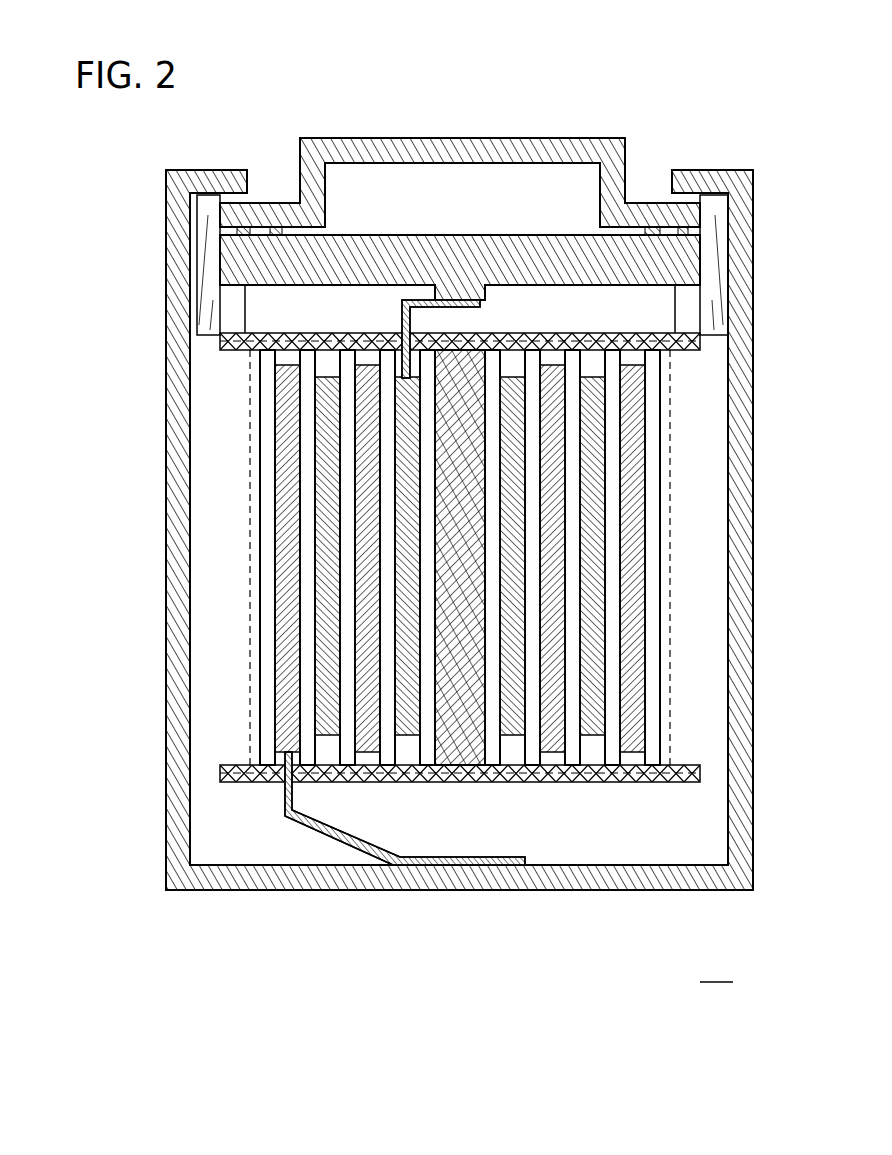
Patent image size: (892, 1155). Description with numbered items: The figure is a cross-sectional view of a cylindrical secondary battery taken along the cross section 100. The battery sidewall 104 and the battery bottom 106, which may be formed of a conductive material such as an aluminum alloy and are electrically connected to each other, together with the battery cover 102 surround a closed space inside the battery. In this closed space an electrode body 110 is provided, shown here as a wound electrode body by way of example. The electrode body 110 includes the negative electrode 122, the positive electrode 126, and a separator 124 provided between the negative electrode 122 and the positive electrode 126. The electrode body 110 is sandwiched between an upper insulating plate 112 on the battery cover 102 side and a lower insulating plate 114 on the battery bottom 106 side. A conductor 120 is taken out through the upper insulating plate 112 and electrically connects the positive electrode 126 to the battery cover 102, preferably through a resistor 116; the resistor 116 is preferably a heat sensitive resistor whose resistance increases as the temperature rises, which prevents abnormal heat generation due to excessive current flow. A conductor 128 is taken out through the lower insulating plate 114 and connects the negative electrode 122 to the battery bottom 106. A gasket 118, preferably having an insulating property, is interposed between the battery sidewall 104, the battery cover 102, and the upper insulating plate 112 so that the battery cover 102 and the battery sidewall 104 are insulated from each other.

The cross section 100 is at (716, 970).
The battery cover 102 is at (418, 153).
The battery sidewall 104 is at (178, 171).
The battery bottom 106 is at (493, 877).
The electrode body 110 is at (670, 595).
The insulating plate 112 is at (688, 350).
The insulating plate 114 is at (217, 768).
The resistor 116 is at (668, 228).
The gasket 118 is at (706, 226).
The conductor 120 is at (440, 298).
The negative electrode 122 is at (287, 523).
The separator 124 is at (310, 615).
The positive electrode 126 is at (327, 702).
The conductor 128 is at (430, 858).